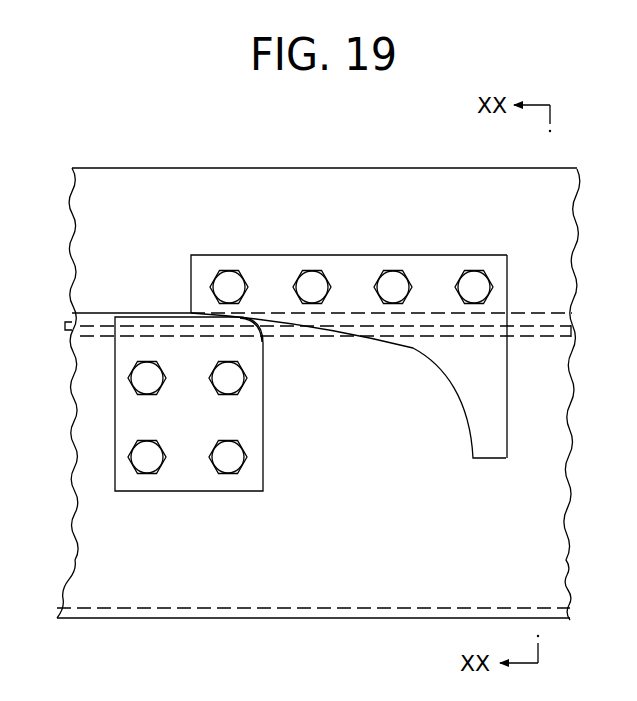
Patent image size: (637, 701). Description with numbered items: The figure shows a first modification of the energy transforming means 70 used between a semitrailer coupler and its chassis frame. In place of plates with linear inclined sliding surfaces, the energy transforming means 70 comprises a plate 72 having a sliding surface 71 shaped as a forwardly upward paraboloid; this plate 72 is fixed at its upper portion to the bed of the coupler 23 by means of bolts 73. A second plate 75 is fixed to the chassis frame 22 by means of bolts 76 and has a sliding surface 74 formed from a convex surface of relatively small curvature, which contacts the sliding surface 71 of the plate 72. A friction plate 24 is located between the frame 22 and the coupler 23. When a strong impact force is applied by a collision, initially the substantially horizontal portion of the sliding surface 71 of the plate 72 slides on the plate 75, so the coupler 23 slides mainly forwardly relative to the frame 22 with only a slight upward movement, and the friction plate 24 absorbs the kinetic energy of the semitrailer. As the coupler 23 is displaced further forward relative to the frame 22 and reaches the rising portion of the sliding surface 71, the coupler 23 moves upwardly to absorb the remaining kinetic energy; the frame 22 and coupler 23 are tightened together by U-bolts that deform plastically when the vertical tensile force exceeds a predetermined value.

The chassis frame 22 is at (545, 553).
The coupler 23 is at (190, 167).
The friction plate 24 is at (565, 328).
The energy transforming means 70 is at (369, 522).
The sliding surface 71 is at (413, 348).
The plate 72 is at (349, 257).
The bolts 73 is at (474, 270).
The sliding surface 74 is at (268, 340).
The plate 75 is at (220, 423).
The bolts 76 is at (228, 475).